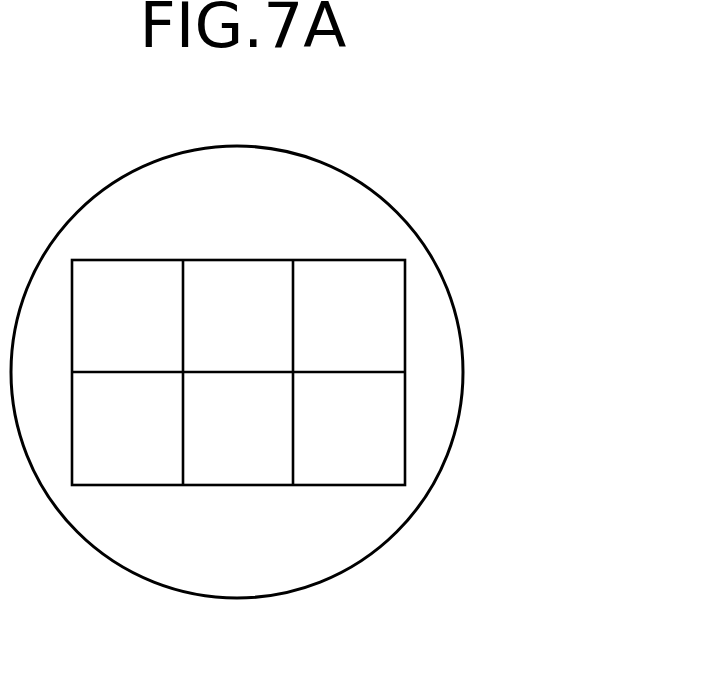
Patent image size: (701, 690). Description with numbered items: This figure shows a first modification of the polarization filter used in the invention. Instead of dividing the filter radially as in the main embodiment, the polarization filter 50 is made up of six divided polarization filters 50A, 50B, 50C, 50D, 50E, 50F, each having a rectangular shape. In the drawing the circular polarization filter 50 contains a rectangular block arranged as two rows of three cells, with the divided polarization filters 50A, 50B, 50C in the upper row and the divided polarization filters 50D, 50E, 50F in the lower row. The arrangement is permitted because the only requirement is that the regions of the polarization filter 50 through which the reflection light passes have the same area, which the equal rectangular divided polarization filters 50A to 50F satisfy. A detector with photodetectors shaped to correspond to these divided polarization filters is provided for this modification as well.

The polarization filter 50 is at (378, 192).
The divided polarization filter 50A is at (96, 334).
The divided polarization filter 50B is at (206, 334).
The divided polarization filter 50C is at (315, 334).
The divided polarization filter 50D is at (96, 446).
The divided polarization filter 50E is at (206, 446).
The divided polarization filter 50F is at (317, 446).